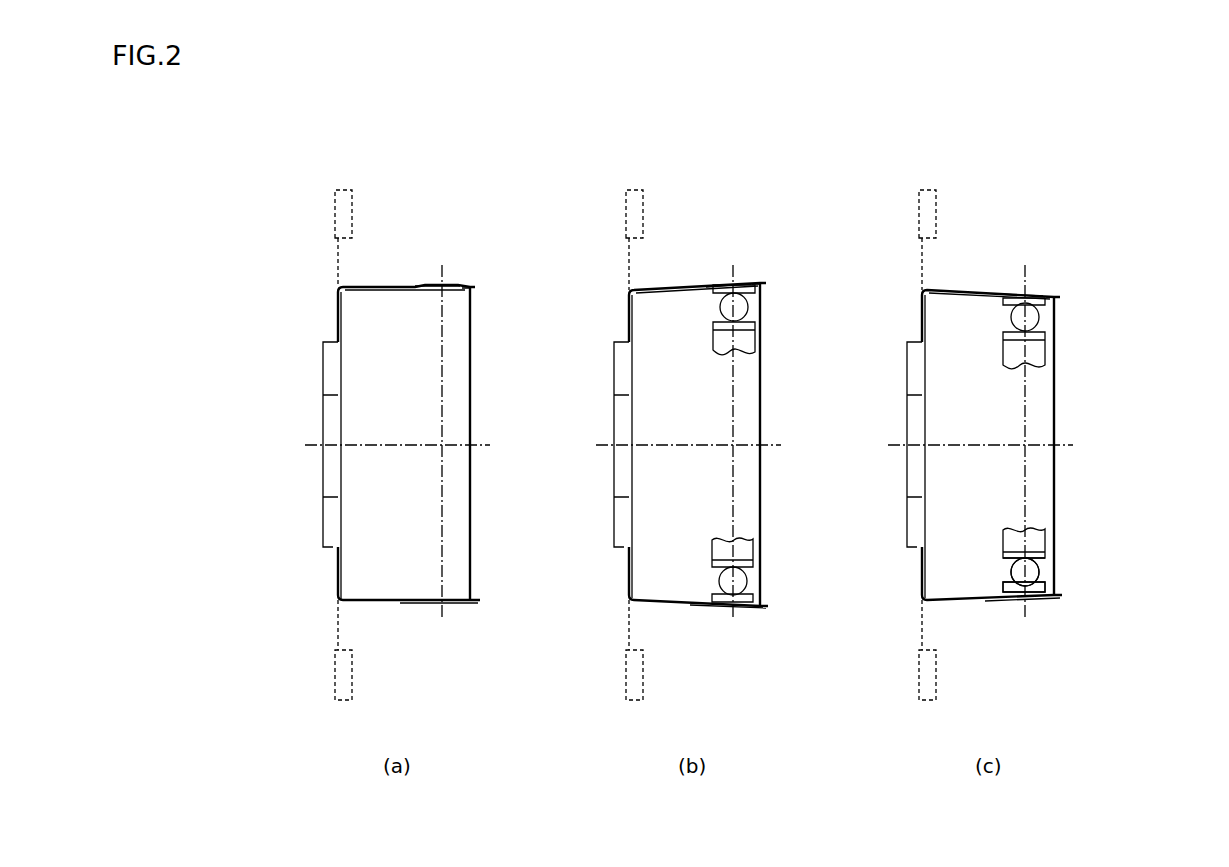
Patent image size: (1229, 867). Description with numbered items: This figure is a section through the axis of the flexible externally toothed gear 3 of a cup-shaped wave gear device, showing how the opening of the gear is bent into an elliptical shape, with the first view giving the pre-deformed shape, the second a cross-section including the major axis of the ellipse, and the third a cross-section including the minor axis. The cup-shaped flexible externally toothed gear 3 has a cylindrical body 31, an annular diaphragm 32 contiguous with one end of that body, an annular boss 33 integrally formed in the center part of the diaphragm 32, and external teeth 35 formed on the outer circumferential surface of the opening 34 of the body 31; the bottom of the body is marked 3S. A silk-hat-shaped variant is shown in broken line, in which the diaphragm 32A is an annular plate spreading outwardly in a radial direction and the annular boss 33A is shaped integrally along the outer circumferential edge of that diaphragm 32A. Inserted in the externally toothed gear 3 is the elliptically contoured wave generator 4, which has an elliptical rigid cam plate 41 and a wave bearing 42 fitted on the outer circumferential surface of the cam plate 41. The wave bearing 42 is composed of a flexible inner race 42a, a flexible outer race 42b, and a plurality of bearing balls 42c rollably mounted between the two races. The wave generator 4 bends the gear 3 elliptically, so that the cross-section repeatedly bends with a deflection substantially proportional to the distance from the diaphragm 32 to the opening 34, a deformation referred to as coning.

The cup-shaped flexible externally toothed gear 3 is at (405, 207).
The cylindrical body 31 is at (375, 289).
The annular diaphragm 32 is at (336, 321).
The annular boss 33 is at (332, 381).
The diaphragm 32A is at (338, 258).
The annular boss 33A is at (342, 210).
The opening 34 is at (468, 287).
The external teeth 35 is at (424, 285).
The bottom surface 3S is at (440, 612).
The wave generator 4 is at (1187, 513).
The rigid cam plate 41 is at (1033, 540).
The wave bearing 42 is at (1123, 543).
The inner race 42a is at (752, 567).
The outer race 42b is at (752, 607).
The bearing balls 42c is at (745, 582).